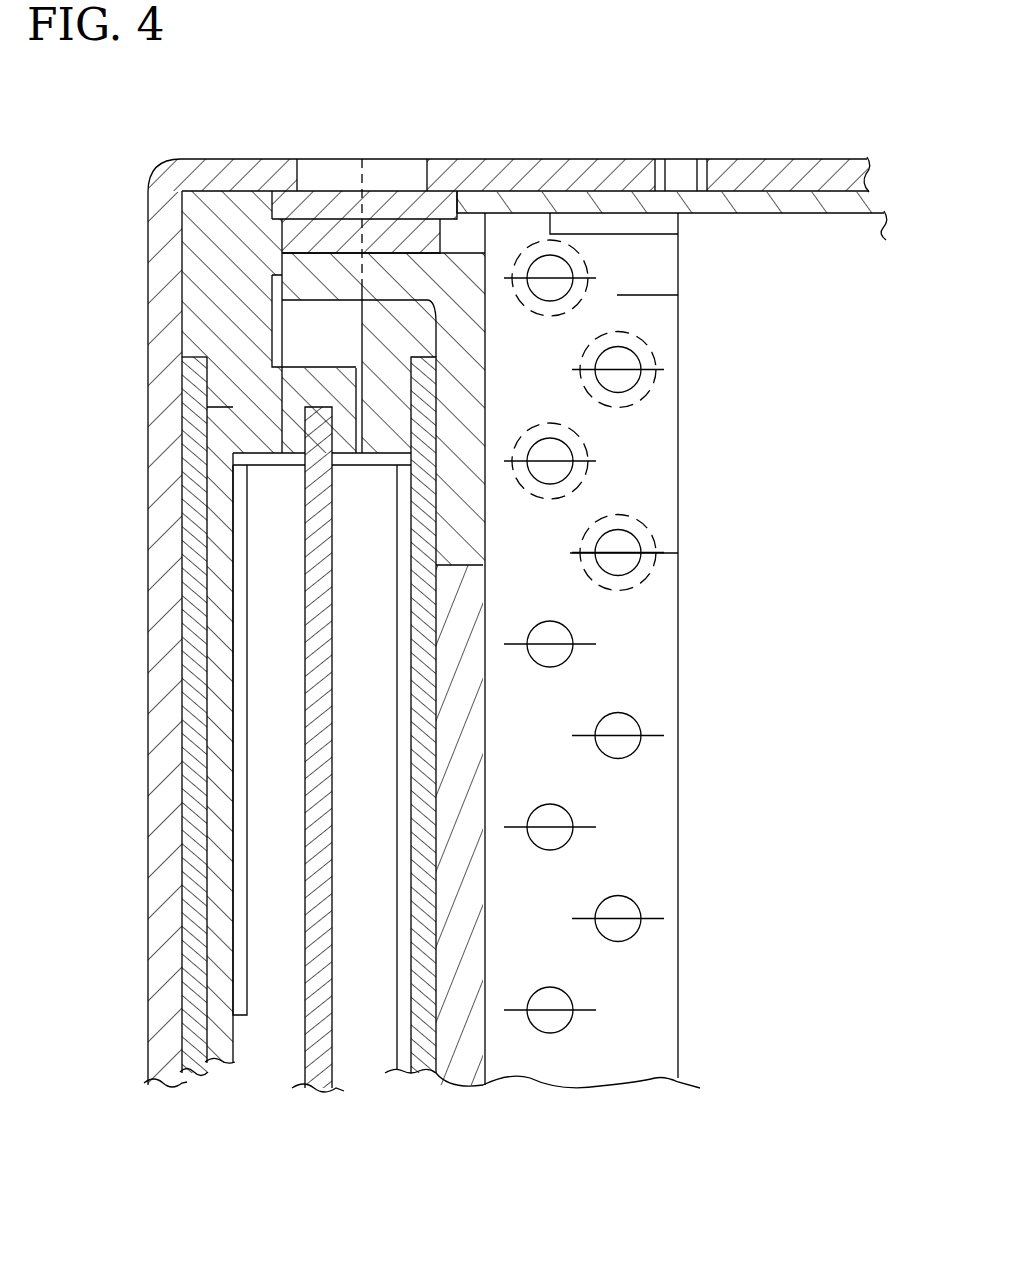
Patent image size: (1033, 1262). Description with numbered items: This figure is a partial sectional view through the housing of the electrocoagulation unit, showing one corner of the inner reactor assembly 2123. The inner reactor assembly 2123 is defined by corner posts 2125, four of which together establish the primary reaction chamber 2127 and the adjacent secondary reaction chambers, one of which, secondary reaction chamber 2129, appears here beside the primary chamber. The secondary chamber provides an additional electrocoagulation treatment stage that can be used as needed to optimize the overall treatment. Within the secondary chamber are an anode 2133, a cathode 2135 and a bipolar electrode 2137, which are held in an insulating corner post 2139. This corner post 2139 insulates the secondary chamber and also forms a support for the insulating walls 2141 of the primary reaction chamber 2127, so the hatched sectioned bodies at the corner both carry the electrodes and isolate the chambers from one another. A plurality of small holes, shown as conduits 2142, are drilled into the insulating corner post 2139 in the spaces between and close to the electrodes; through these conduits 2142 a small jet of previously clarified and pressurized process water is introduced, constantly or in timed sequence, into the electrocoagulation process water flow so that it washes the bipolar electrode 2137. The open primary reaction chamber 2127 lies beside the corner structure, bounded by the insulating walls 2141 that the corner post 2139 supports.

The inner reactor assembly 2123 is at (832, 160).
The corner post 2125 is at (147, 533).
The primary reaction chamber 2127 is at (760, 718).
The secondary reaction chamber 2129 is at (180, 655).
The anode 2133 is at (233, 928).
The cathode 2135 is at (411, 825).
The bipolar electrode 2137 is at (305, 830).
The corner post 2139 is at (192, 327).
The insulating wall 2141 is at (148, 270).
The conduit 2142 is at (277, 466).